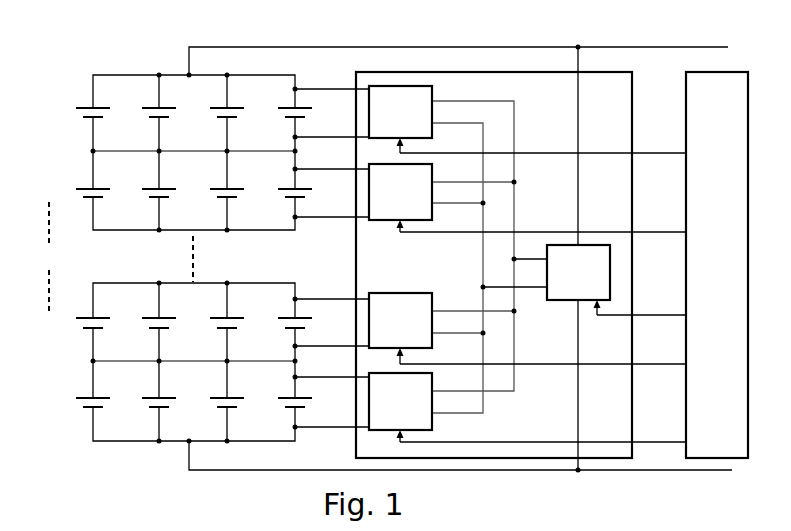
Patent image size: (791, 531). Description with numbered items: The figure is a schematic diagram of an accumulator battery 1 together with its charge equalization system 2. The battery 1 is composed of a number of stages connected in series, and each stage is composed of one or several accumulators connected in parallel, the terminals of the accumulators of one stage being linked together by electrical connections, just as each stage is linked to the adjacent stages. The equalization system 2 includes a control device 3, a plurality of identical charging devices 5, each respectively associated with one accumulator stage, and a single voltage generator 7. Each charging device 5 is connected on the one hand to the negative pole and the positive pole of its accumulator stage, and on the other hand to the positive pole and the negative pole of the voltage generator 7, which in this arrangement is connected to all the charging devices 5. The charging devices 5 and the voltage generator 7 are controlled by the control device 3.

The accumulator battery 1 is at (130, 75).
The charge equalization system 2 is at (540, 72).
The control device 3 is at (686, 117).
The charging device 5 is at (434, 86).
The voltage generator 7 is at (560, 303).